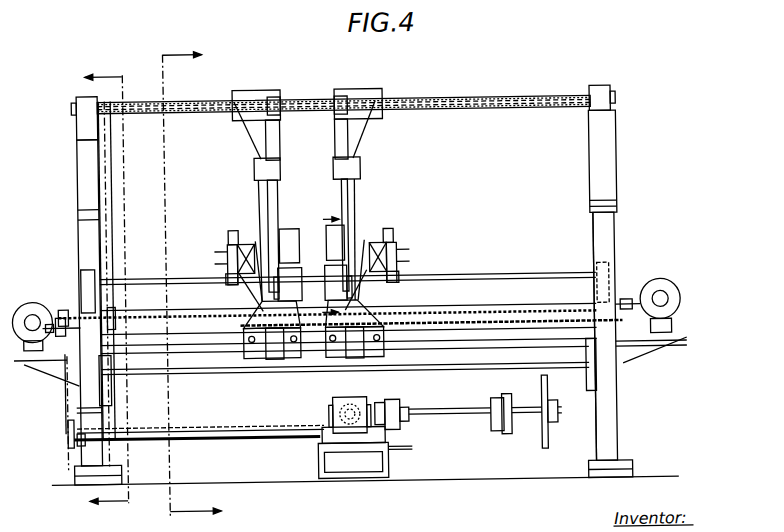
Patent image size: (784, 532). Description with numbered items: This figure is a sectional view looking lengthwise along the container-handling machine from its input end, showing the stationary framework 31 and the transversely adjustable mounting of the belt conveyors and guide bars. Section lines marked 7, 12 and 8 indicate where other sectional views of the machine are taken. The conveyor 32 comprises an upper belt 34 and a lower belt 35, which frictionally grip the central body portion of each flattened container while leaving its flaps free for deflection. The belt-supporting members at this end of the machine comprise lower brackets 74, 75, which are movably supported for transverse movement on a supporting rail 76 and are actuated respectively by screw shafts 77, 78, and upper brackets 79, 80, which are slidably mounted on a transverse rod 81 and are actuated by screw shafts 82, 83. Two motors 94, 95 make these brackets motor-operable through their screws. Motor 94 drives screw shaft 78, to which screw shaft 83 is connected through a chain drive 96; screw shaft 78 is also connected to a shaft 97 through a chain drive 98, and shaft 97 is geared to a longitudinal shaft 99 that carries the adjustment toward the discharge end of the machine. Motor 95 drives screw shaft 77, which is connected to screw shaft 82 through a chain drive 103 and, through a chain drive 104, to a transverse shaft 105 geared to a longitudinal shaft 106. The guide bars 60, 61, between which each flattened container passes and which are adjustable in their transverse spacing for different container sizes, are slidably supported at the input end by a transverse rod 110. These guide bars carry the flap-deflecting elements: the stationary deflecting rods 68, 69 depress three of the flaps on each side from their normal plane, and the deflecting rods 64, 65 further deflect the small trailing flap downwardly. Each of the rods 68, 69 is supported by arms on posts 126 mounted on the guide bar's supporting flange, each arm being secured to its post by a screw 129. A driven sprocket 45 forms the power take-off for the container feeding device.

The section line 7 is at (179, 286).
The section line 12 is at (115, 289).
The section line 8 is at (325, 265).
The stationary framework 31 is at (617, 433).
The conveyor 32 is at (325, 274).
The upper belt 34 is at (288, 228).
The lower belt 35 is at (300, 240).
The driven sprocket 45 is at (546, 394).
The guide bar 60 is at (228, 261).
The guide bar 61 is at (399, 257).
The deflecting rod 64 is at (256, 294).
The deflecting rod 65 is at (370, 290).
The stationary deflecting rod 68 is at (257, 240).
The stationary deflecting rod 69 is at (366, 240).
The lower bracket 74 is at (247, 352).
The lower bracket 75 is at (382, 352).
The supporting rail 76 is at (455, 371).
The screw shaft 77 is at (175, 313).
The screw shaft 78 is at (488, 323).
The upper bracket 79 is at (265, 136).
The upper bracket 80 is at (358, 135).
The transverse rod 81 is at (458, 99).
The screw shaft 82 is at (203, 100).
The screw shaft 83 is at (546, 110).
The motor 94 is at (31, 298).
The motor 95 is at (660, 283).
The chain drive 96 is at (100, 236).
The shaft 97 is at (248, 438).
The chain drive 98 is at (82, 406).
The longitudinal shaft 99 is at (395, 438).
The chain drive 103 is at (116, 212).
The chain drive 104 is at (64, 392).
The transverse shaft 105 is at (285, 425).
The longitudinal shaft 106 is at (400, 425).
The transverse rod 110 is at (488, 276).
The post 126 is at (226, 250).
The screw 129 is at (231, 229).